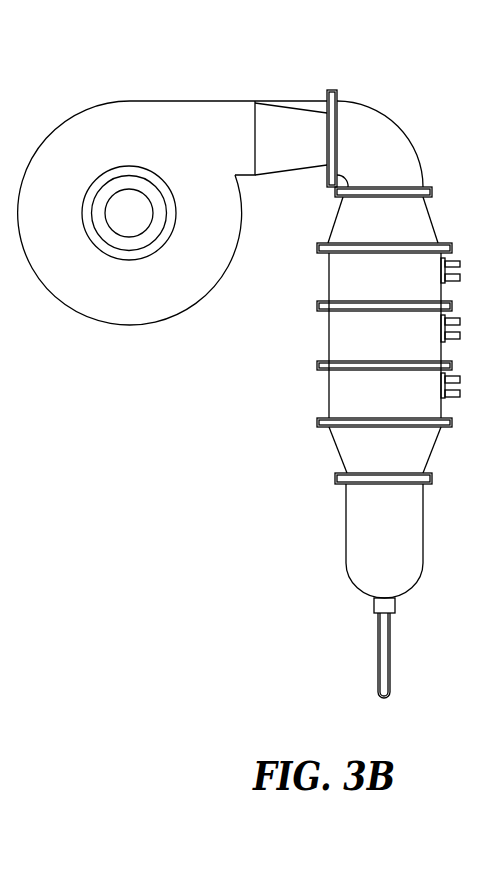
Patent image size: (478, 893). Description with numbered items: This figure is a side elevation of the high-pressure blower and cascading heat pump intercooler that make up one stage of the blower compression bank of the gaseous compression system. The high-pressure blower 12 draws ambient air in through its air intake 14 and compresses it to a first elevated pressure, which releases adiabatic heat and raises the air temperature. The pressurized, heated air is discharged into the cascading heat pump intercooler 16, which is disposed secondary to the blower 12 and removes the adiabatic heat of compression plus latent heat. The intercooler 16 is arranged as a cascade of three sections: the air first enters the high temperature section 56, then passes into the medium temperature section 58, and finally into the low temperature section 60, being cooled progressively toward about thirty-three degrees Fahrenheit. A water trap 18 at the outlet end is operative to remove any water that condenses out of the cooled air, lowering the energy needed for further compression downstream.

The high-pressure blower 12 is at (158, 100).
The air intake 14 is at (107, 170).
The cascading heat pump intercooler 16 is at (230, 423).
The water trap 18 is at (378, 638).
The high temperature section 56 is at (329, 282).
The medium temperature section 58 is at (329, 336).
The low temperature section 60 is at (329, 395).